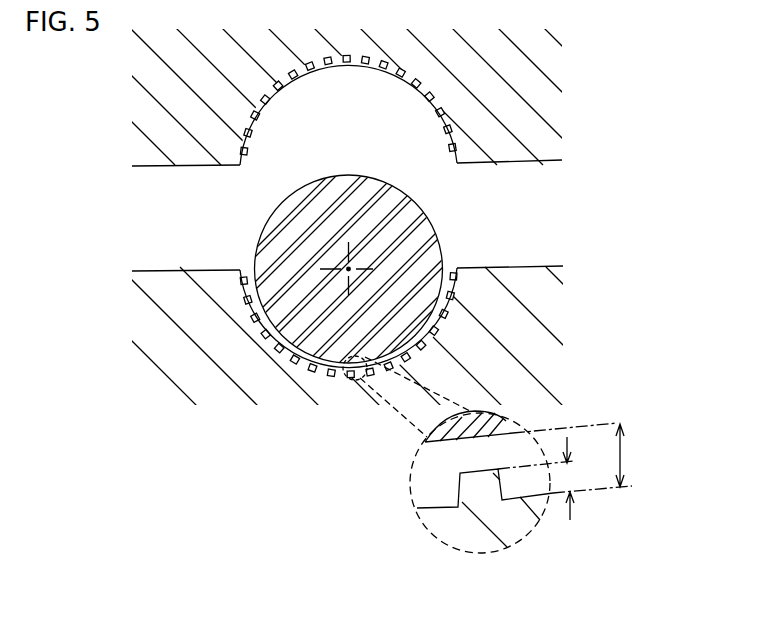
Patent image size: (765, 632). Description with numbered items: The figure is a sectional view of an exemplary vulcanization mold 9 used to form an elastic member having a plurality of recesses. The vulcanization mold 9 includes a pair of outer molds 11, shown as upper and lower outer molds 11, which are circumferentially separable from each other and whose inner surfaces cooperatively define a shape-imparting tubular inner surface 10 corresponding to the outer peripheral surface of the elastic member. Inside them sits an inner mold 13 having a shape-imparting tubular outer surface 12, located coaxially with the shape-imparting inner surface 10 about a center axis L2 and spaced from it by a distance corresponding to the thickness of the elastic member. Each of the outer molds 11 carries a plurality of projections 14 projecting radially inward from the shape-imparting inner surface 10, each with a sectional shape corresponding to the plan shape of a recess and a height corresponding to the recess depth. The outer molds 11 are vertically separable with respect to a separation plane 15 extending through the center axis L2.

The vulcanization mold 9 is at (670, 64).
The shape-imparting tubular inner surface 10 is at (363, 60).
The outer molds 11 is at (140, 107).
The shape-imparting tubular outer surface 12 is at (420, 213).
The inner mold 13 is at (273, 213).
The projections 14 is at (267, 100).
The separation plane 15 is at (162, 165).
The center axis L2 is at (349, 269).